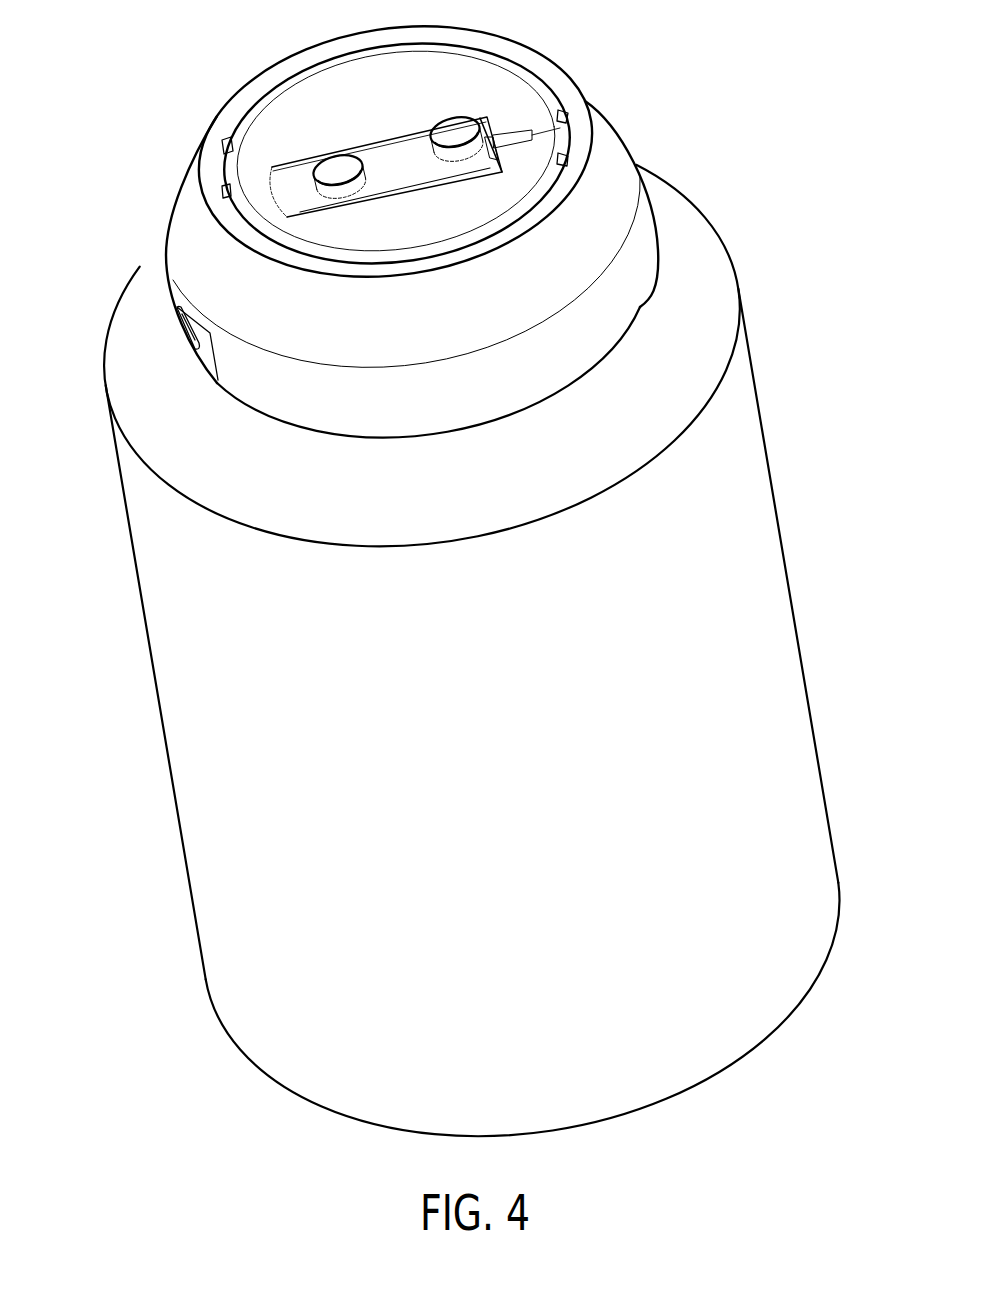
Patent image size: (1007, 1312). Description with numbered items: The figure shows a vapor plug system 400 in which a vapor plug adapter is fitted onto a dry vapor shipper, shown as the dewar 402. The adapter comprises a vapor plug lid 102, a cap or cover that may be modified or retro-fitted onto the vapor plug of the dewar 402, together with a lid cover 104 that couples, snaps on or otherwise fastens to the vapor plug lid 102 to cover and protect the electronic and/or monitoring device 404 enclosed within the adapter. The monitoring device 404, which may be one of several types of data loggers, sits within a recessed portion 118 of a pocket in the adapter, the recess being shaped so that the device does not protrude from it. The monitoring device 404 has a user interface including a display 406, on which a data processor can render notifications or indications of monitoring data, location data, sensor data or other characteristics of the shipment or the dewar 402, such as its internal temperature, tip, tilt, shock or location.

The vapor plug system 400 is at (115, 60).
The dewar 402 is at (753, 1025).
The vapor plug lid 102 is at (632, 154).
The lid cover 104 is at (513, 83).
The electronic and/or monitoring device 404 is at (368, 148).
The display 406 is at (443, 175).
The recessed portion 118 is at (387, 195).